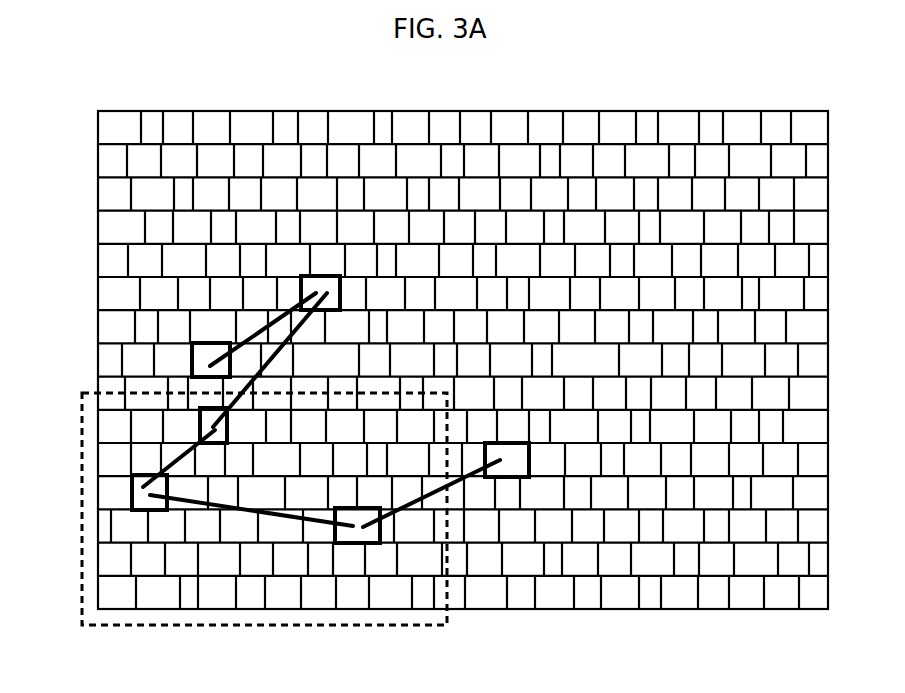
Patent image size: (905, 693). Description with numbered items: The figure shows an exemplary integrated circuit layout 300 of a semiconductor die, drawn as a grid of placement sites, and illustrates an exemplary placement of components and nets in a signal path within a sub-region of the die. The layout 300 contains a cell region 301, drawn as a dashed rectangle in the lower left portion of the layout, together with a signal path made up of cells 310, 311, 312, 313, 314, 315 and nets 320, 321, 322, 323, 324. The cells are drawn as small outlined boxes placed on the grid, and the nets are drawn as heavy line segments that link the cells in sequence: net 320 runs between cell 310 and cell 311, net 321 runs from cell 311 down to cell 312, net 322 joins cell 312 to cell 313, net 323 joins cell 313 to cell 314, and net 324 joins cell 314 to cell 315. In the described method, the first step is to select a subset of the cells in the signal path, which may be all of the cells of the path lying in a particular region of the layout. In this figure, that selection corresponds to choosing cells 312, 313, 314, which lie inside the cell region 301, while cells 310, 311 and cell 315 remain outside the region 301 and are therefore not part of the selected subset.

The integrated circuit layout 300 is at (726, 84).
The cell region 301 is at (288, 628).
The cell 310 is at (199, 357).
The cell 311 is at (300, 283).
The cell 312 is at (198, 422).
The cell 313 is at (132, 492).
The cell 314 is at (351, 545).
The cell 315 is at (507, 478).
The net 320 is at (262, 324).
The net 321 is at (265, 364).
The net 322 is at (180, 462).
The net 323 is at (222, 511).
The net 324 is at (414, 510).